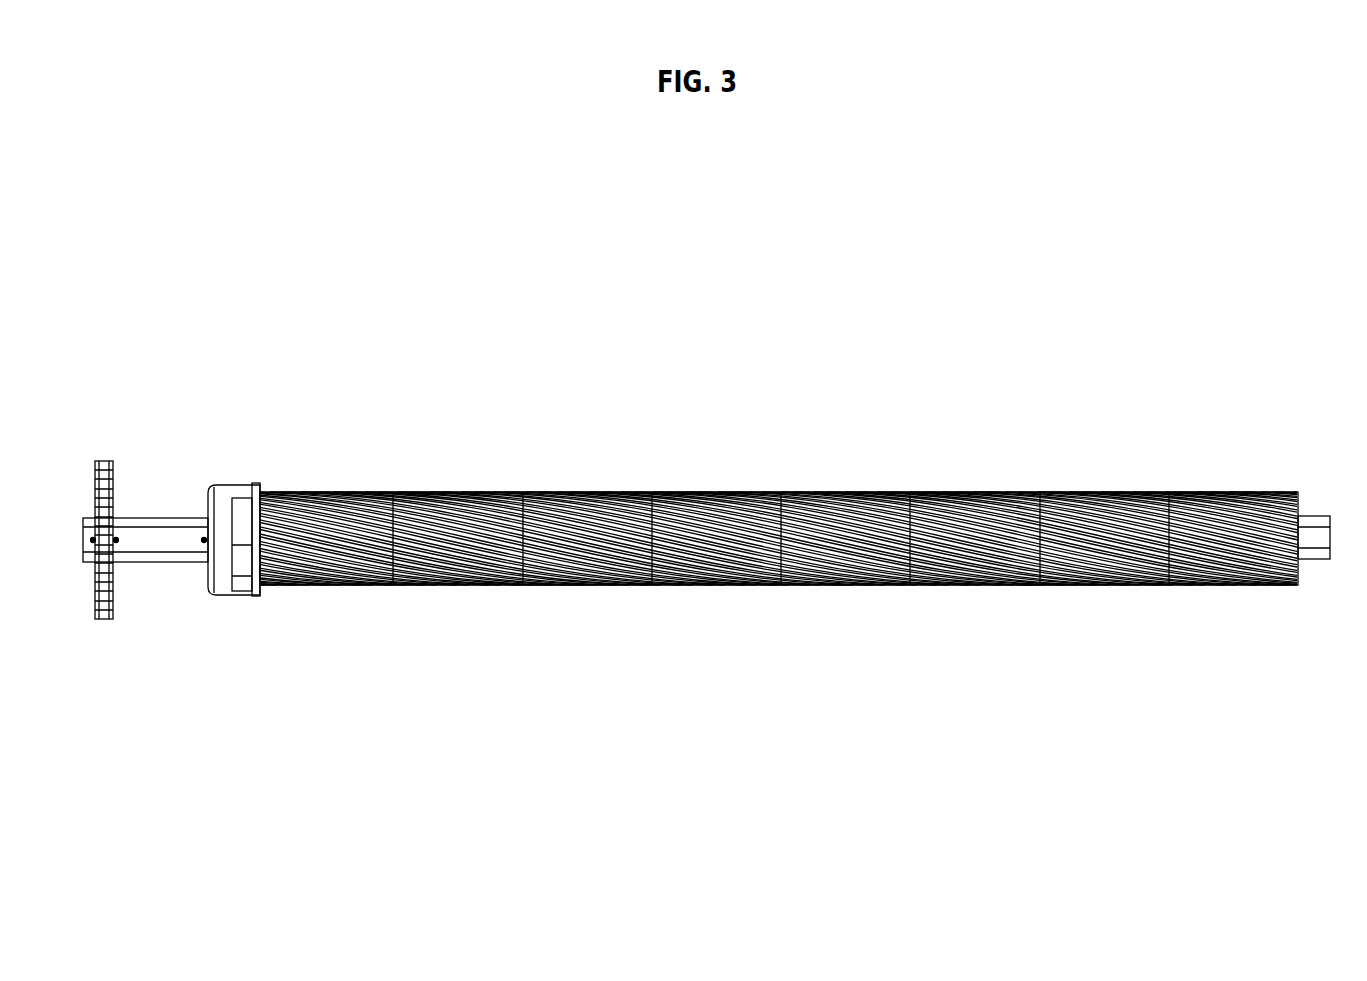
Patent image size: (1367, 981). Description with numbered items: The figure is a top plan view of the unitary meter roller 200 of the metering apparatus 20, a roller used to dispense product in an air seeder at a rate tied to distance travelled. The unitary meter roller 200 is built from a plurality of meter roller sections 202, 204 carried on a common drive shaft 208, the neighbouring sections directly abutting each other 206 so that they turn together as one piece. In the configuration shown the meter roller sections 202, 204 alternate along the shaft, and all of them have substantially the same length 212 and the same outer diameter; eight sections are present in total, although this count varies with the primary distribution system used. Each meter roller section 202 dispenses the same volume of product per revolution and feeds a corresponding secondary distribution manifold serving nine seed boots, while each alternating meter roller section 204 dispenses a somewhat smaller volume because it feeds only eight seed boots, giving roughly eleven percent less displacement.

The metering apparatus 20 is at (561, 703).
The unitary meter roller 200 is at (645, 419).
The meter roller section 202 is at (312, 500).
The meter roller section 204 is at (463, 580).
The abutment of meter roller sections 206 is at (392, 489).
The common drive shaft 208 is at (160, 538).
The length of meter roller section 212 is at (395, 488).